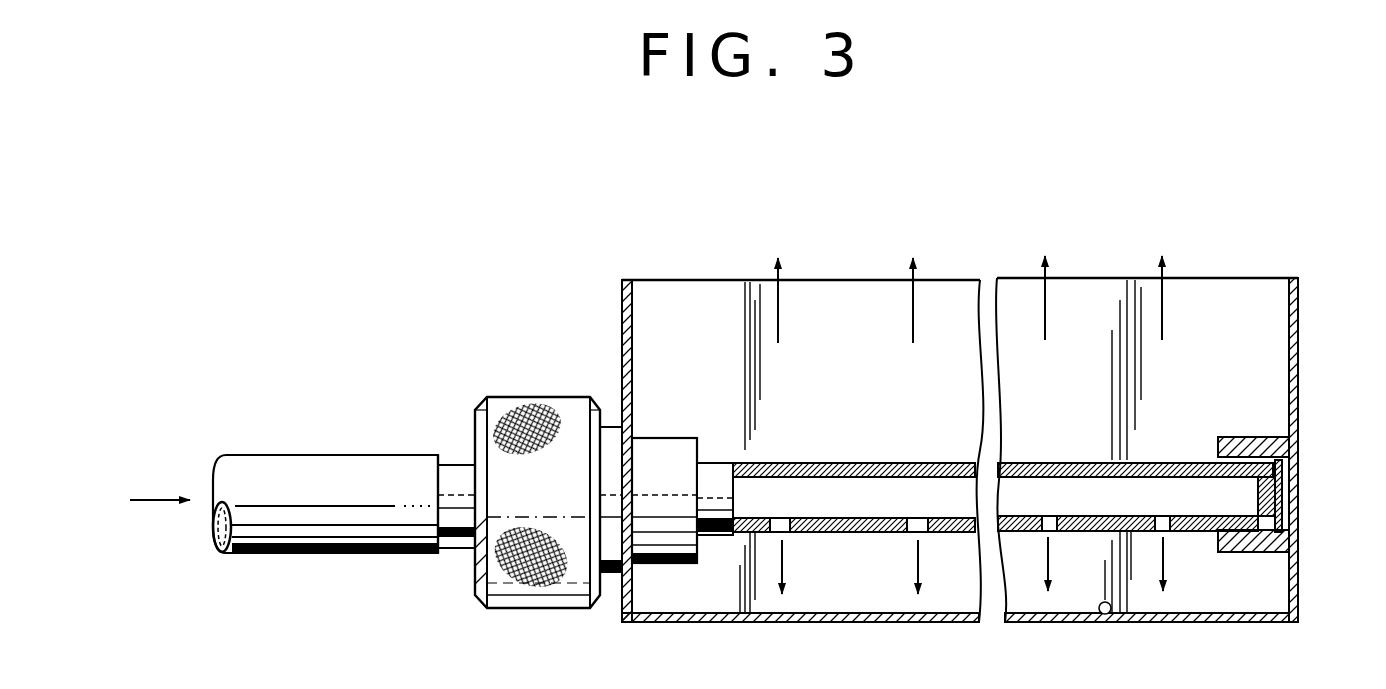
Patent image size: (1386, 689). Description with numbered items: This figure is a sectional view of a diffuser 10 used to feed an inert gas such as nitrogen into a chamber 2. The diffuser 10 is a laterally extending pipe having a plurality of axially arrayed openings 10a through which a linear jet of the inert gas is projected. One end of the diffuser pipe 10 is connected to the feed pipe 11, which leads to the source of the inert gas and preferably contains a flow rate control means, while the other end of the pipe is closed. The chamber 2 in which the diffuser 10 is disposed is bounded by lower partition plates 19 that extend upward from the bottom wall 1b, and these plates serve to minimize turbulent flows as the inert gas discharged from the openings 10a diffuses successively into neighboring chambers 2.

The chamber 2 is at (1222, 385).
The diffuser 10 is at (1007, 497).
The openings 10a is at (787, 526).
The pipe 11 is at (320, 465).
The lower partition plates 19 is at (690, 290).
The bottom wall 1b is at (1107, 614).